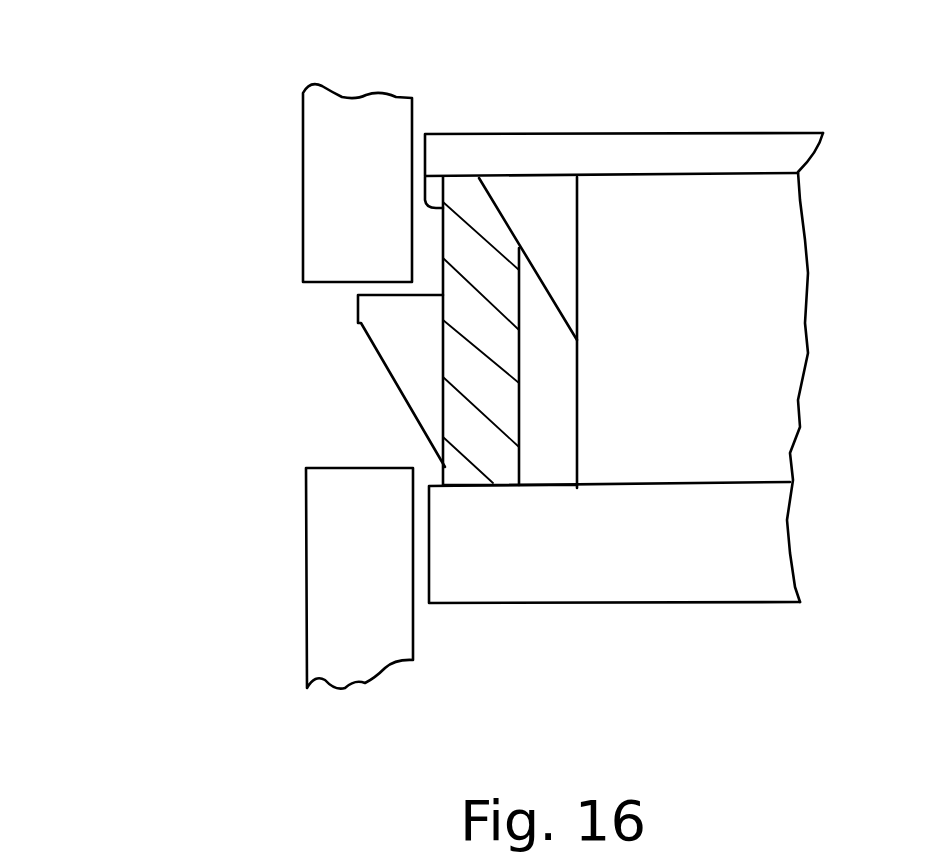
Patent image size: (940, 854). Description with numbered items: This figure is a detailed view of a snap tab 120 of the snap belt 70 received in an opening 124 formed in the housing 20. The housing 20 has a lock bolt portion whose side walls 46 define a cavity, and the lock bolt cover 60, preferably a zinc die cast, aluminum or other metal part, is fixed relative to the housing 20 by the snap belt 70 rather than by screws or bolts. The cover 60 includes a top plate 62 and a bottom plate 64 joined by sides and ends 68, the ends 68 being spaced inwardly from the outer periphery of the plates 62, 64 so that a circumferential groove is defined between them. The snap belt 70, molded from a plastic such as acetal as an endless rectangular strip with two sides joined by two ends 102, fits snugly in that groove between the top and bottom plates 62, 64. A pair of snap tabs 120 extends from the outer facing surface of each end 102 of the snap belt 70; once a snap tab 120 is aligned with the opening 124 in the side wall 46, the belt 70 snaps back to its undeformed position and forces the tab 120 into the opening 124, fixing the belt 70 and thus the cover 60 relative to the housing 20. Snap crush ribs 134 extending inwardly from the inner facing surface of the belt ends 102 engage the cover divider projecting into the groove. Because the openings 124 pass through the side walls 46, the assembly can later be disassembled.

The housing 20 is at (289, 122).
The side walls 46 is at (323, 523).
The lock bolt cover 60 is at (818, 110).
The top plate 62 is at (502, 147).
The bottom plate 64 is at (507, 578).
The ends 68 is at (577, 283).
The snap belt 70 is at (425, 177).
The ends 102 is at (490, 387).
The snap tabs 120 is at (382, 323).
The openings 124 is at (297, 428).
The snap crush ribs 134 is at (547, 435).